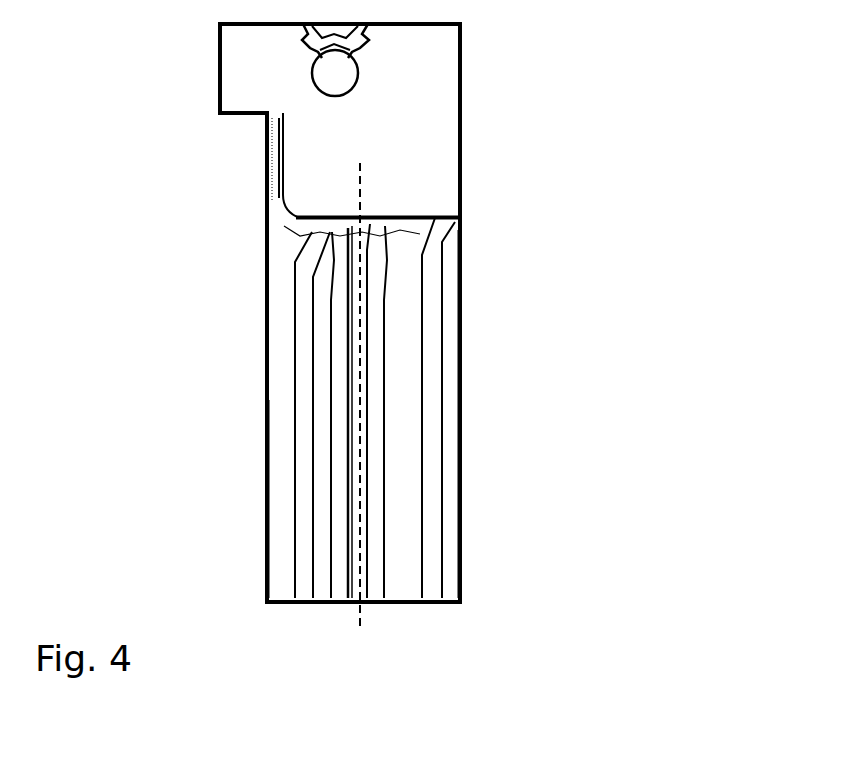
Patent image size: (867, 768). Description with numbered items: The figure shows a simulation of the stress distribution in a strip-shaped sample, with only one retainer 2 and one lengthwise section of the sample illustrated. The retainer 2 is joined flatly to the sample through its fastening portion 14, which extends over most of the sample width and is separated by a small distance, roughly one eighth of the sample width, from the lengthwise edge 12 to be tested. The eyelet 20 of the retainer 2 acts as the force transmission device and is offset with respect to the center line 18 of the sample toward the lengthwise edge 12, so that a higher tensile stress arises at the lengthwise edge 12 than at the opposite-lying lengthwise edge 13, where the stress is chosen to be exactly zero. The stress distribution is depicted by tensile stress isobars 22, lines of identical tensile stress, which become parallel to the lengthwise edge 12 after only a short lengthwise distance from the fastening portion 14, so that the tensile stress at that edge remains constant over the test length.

The retainer 2 is at (465, 135).
The lengthwise edge 12 is at (265, 548).
The lengthwise edge 13 is at (460, 352).
The fastening portion 14 is at (300, 170).
The center line 18 is at (362, 192).
The eyelet 20 is at (357, 96).
The tensile stress isobars 22 is at (335, 351).